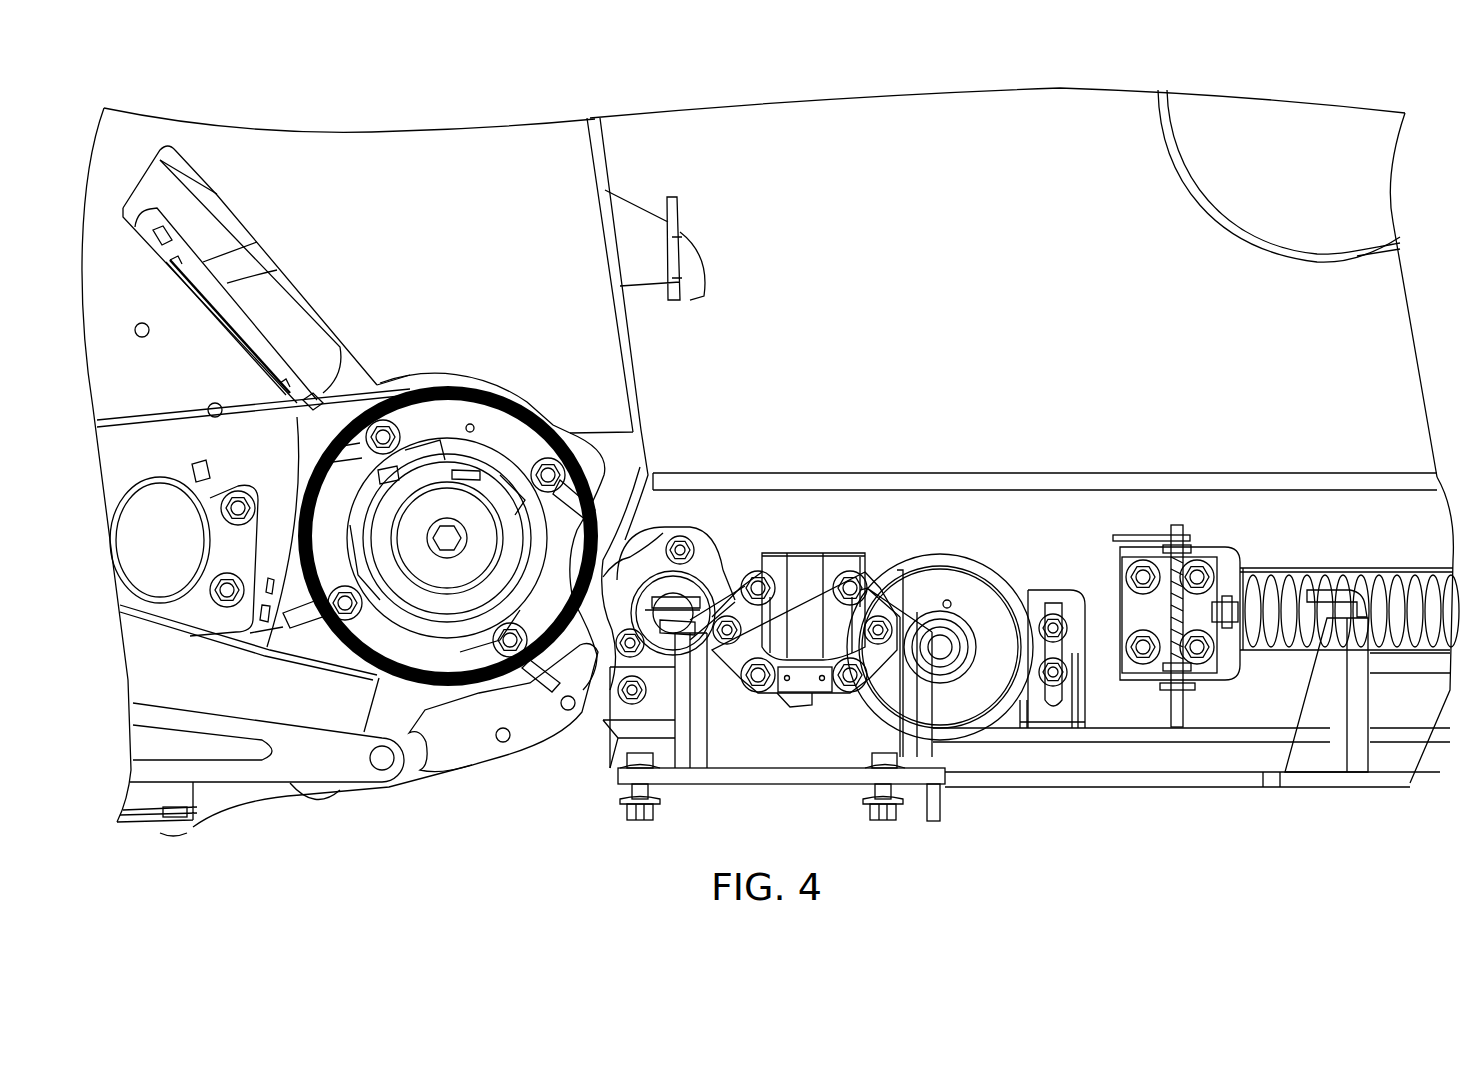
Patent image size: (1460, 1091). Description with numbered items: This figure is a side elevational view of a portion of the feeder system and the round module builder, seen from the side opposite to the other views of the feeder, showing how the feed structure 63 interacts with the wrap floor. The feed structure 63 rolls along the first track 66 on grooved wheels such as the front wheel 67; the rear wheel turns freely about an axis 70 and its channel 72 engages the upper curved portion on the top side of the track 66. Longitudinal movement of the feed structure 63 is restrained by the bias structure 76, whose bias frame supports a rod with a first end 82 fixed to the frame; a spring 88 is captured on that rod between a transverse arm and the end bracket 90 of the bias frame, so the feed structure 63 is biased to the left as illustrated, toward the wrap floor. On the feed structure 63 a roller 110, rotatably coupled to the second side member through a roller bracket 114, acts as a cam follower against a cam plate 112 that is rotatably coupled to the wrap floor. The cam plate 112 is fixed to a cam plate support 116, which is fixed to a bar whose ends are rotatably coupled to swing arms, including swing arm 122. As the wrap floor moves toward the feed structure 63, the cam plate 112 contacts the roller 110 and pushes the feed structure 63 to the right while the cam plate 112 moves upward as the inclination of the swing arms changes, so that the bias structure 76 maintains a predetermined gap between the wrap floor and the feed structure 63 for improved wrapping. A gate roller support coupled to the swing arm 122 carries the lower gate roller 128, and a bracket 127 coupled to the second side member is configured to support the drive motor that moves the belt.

The feed structure 63 is at (1045, 433).
The first track 66 is at (1113, 760).
The front wheel 67 is at (1143, 487).
The axis 70 is at (940, 647).
The channel 72 is at (940, 631).
The bias structure 76 is at (1180, 765).
The first end 82 is at (1220, 600).
The spring 88 is at (1423, 592).
The end bracket 90 is at (1205, 545).
The roller 110 is at (687, 632).
The cam plate 112 is at (612, 632).
The roller bracket 114 is at (660, 555).
The cam plate support 116 is at (480, 748).
The swing arm 122 is at (297, 765).
The bracket 127 is at (758, 753).
The lower gate roller 128 is at (445, 416).